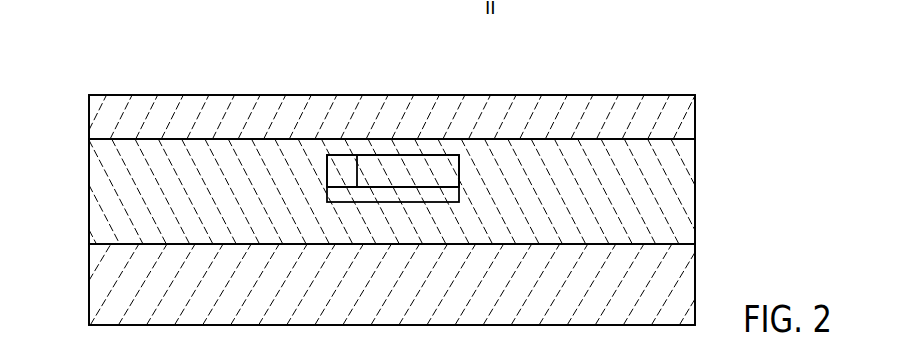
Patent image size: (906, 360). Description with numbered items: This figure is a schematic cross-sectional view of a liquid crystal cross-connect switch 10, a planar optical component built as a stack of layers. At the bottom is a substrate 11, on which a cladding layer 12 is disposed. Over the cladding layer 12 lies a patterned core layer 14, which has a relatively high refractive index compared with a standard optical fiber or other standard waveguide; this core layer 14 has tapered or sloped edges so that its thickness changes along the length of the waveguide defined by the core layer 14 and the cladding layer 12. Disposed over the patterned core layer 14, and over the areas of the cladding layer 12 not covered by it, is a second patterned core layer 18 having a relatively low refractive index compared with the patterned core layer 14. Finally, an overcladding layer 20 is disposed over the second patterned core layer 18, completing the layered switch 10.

The liquid crystal cross-connect switch 10 is at (72, 50).
The substrate 11 is at (81, 306).
The cladding layer 12 is at (697, 212).
The patterned core layer 14 is at (355, 130).
The second patterned core layer 18 is at (395, 163).
The overcladding layer 20 is at (657, 112).